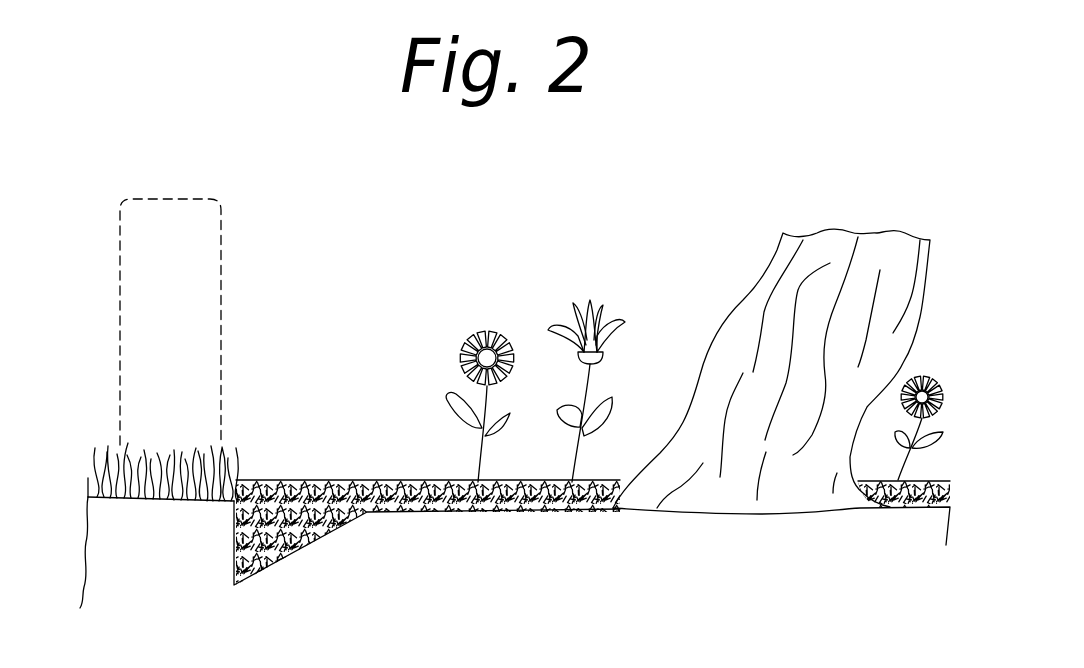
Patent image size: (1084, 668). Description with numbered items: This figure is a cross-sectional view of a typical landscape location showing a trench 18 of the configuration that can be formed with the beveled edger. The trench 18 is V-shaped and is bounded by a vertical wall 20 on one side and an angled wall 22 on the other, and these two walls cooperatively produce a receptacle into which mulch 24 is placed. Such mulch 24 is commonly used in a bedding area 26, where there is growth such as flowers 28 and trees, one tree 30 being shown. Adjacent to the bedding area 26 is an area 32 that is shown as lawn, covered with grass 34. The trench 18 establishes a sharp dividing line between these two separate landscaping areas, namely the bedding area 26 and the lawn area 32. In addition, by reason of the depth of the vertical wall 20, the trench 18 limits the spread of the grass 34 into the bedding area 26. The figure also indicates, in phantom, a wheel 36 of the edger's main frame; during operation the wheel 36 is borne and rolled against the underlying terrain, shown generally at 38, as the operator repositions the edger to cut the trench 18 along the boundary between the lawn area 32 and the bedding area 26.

The trench 18 is at (330, 520).
The vertical wall 20 is at (238, 535).
The angled wall 22 is at (337, 517).
The mulch 24 is at (305, 540).
The bedding area 26 is at (412, 358).
The flowers 28 is at (624, 381).
The tree 30 is at (752, 287).
The lawn area 32 is at (208, 416).
The grass 34 is at (133, 460).
The wheel 36 is at (163, 240).
The underlying terrain 38 is at (80, 494).